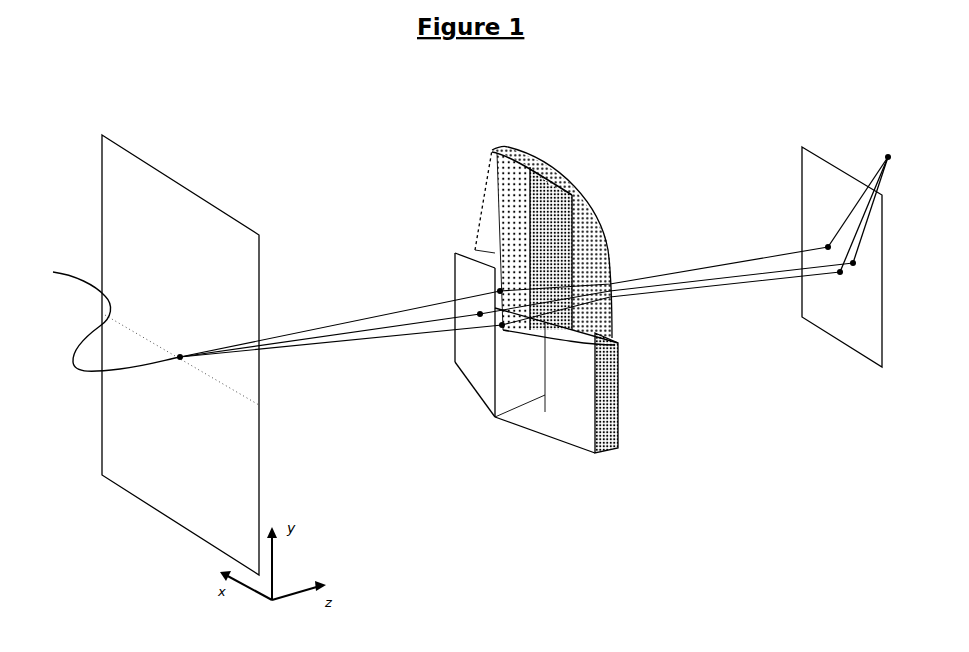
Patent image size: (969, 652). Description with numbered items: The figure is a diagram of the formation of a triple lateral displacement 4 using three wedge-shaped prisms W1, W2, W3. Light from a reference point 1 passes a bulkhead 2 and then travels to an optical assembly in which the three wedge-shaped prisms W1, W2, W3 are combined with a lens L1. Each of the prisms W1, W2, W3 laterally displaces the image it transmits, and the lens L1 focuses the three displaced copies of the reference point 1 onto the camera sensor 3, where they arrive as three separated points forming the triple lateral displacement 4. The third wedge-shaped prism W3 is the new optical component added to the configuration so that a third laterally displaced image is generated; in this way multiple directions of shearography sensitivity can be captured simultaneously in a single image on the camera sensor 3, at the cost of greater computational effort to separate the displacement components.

The reference point 1 is at (106, 316).
The bulkhead 2 is at (180, 355).
The camera sensor 3 is at (842, 259).
The triple lateral displacement 4 is at (869, 199).
The wedge-shaped prism W1 is at (451, 335).
The wedge-shaped prism W2 is at (556, 397).
The wedge-shaped prism W3 is at (466, 199).
The lens L1 is at (555, 245).